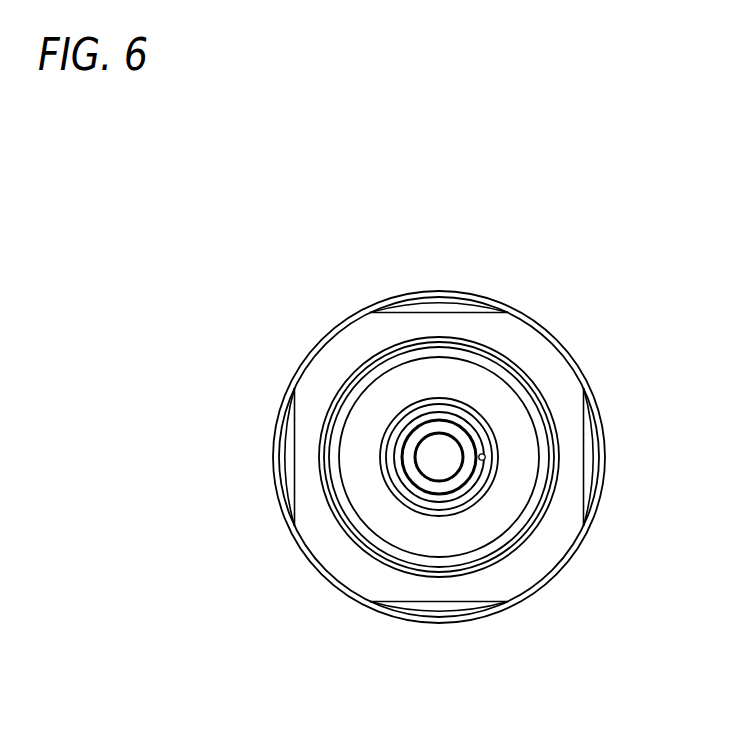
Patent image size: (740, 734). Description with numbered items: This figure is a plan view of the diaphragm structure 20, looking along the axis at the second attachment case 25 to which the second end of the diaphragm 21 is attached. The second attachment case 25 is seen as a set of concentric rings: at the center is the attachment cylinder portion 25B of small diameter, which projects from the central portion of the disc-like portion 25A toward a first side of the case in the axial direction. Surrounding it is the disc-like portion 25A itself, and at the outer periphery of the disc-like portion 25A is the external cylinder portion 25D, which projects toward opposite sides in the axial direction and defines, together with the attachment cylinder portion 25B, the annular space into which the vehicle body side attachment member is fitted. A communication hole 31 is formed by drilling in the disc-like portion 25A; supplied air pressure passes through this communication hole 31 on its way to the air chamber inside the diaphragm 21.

The diaphragm structure 20 is at (341, 277).
The diaphragm 21 is at (275, 454).
The second attachment case 25 is at (551, 359).
The disc-like portion 25A is at (405, 538).
The attachment cylinder portion 25B is at (422, 481).
The external cylinder portion 25D is at (417, 588).
The communication hole 31 is at (485, 456).